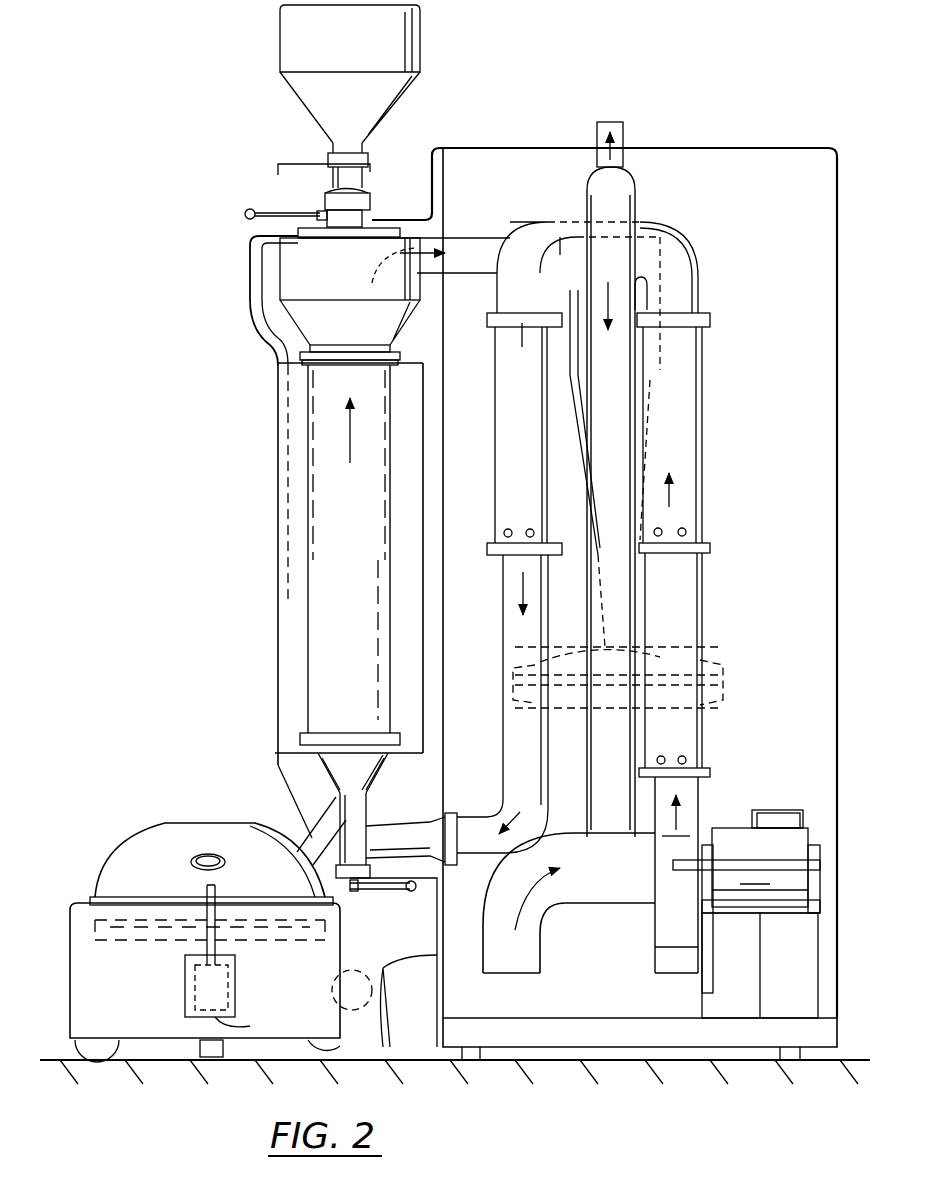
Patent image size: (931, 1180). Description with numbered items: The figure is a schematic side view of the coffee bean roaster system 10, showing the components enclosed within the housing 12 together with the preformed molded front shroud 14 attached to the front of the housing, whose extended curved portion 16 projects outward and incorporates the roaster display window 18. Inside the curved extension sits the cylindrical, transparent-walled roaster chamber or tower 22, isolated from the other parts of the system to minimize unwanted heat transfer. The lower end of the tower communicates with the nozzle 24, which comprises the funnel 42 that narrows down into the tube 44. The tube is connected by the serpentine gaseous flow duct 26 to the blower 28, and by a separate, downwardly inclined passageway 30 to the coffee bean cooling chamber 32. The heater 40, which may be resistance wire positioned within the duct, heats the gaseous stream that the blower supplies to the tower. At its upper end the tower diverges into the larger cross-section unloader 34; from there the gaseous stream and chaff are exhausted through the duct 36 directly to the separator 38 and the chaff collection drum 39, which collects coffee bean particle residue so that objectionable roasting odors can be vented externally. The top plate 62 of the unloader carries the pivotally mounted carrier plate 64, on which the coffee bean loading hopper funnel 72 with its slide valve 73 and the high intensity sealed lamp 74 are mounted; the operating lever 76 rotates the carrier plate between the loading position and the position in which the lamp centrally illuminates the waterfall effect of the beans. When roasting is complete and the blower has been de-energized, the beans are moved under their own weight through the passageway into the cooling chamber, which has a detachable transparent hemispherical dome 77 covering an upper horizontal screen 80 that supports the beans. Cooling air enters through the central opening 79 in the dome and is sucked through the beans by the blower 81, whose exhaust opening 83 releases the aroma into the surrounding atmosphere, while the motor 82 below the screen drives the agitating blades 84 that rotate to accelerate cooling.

The roaster system 10 is at (152, 131).
The housing 12 is at (687, 148).
The front shroud 14 is at (258, 326).
The extended curved portion 16 is at (250, 292).
The roaster display window 18 is at (278, 590).
The coffee bean roaster chamber or tower 22 is at (308, 512).
The nozzle 24 is at (320, 770).
The serpentine gaseous flow line or duct 26 is at (448, 812).
The blower 28 is at (660, 966).
The downwardly inclined passageway 30 is at (312, 808).
The coffee bean cooling chamber 32 is at (110, 858).
The unloader 34 is at (280, 262).
The duct 36 is at (493, 238).
The separator 38 is at (688, 425).
The chaff collection drum 39 is at (692, 640).
The heater 40 is at (495, 470).
The funnel 42 is at (384, 773).
The tube 44 is at (370, 805).
The top surface or plate 62 is at (397, 237).
The carrier plate 64 is at (375, 220).
The coffee bean loading hopper funnel 72 is at (280, 37).
The slide valve 73 is at (275, 162).
The high intensity sealed lamp 74 is at (325, 196).
The operating lever 76 is at (248, 210).
The transparent hemispherical dome 77 is at (150, 826).
The central opening 79 is at (205, 855).
The upper horizontal screen 80 is at (98, 897).
The blower 81 is at (337, 972).
The motor 82 is at (232, 990).
The exhaust opening 83 is at (248, 1023).
The agitating blades 84 is at (132, 938).